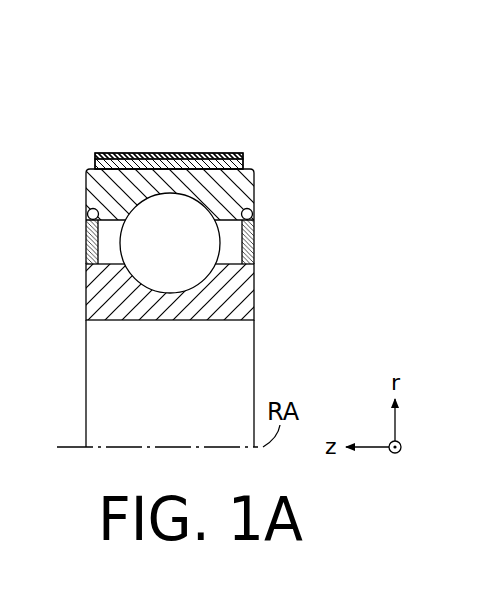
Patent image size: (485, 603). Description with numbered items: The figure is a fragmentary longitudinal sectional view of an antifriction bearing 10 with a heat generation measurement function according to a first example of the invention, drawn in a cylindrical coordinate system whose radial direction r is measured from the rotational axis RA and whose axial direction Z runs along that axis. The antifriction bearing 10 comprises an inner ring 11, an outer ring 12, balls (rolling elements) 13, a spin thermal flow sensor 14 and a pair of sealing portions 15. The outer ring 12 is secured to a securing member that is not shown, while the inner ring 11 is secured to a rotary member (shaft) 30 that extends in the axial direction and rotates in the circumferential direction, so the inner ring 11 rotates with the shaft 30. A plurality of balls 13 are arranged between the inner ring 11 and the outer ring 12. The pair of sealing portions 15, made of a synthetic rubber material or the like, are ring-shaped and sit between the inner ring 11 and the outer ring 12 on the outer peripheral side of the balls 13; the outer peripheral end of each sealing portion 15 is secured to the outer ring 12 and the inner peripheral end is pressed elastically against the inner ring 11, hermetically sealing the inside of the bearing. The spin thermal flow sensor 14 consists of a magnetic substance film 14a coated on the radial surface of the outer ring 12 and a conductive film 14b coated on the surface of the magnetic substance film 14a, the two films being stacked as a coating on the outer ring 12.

The antifriction bearing with heat generation measurement function 10 is at (122, 77).
The inner ring 11 is at (254, 302).
The outer ring 12 is at (254, 197).
The balls (rolling elements) 13 is at (207, 250).
The spin thermal flow sensor 14 is at (311, 131).
The magnetic substance film 14a is at (243, 163).
The conductive film 14b is at (242, 155).
The sealing portions 15 is at (251, 234).
The rotary member (shaft) 30 is at (184, 412).